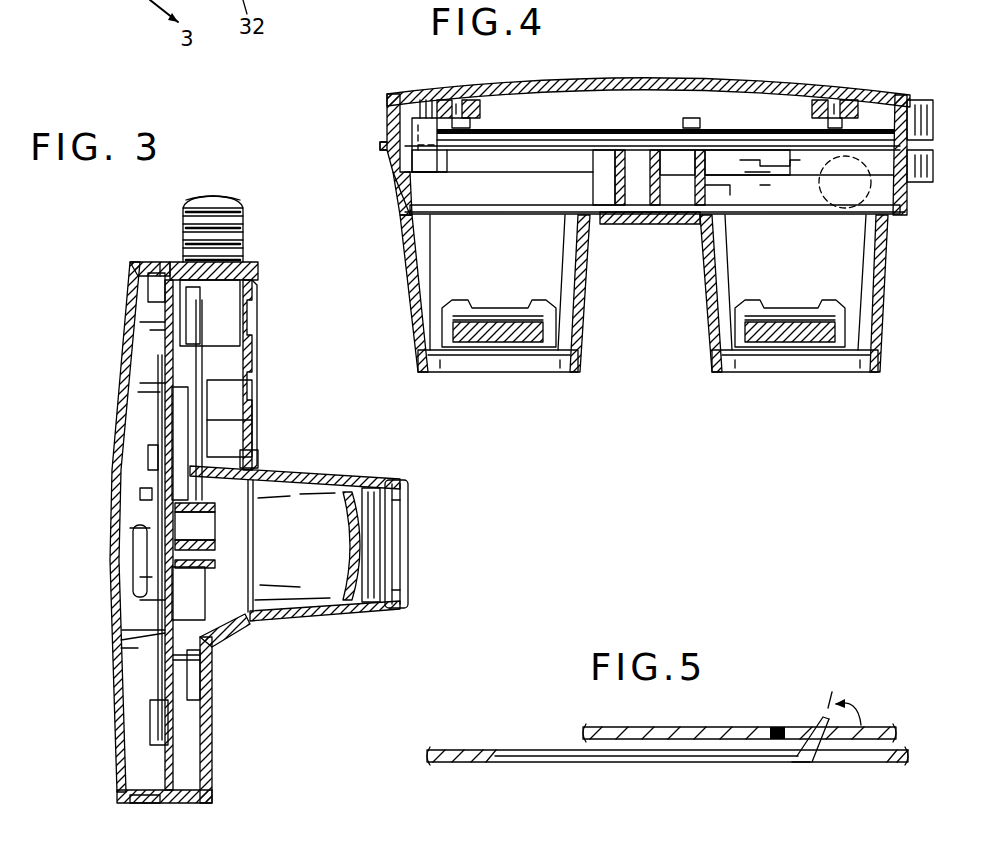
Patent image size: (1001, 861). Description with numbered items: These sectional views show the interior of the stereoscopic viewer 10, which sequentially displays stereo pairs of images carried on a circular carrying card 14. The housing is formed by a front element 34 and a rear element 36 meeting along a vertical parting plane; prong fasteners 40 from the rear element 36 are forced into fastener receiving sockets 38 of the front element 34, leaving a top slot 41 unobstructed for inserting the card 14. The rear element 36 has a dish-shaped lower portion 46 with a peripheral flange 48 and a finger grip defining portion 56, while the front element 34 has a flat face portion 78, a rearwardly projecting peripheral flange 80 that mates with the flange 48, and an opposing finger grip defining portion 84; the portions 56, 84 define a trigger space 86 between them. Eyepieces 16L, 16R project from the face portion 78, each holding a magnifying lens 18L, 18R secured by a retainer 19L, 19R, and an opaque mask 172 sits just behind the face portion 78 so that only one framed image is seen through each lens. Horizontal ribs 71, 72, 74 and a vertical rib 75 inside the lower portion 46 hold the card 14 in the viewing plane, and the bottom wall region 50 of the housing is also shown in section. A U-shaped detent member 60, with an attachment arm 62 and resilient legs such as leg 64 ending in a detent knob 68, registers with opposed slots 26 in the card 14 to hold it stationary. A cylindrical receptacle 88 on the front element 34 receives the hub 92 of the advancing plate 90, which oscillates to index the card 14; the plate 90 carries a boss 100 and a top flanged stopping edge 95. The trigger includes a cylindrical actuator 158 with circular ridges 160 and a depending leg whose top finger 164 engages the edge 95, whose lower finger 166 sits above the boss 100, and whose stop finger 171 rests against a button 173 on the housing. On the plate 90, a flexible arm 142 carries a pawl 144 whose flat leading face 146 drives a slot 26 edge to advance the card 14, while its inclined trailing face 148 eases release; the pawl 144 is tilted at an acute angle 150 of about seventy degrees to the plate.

In FIG. 3, the stereoscopic viewer 10 is at (69, 281).
In FIG. 4, the stereoscopic viewer 10 is at (661, 420).
In FIG. 4, the carrying card 14 is at (552, 128).
In FIG. 5, the carrying card 14 is at (720, 727).
In FIG. 3, the left eyepiece 16L is at (350, 470).
In FIG. 4, the left eyepiece 16L is at (410, 315).
In FIG. 4, the right eyepiece 16R is at (885, 260).
In FIG. 3, the left magnifying lens 18L is at (346, 522).
In FIG. 4, the left magnifying lens 18L is at (490, 344).
In FIG. 4, the right magnifying lens 18R is at (800, 344).
In FIG. 3, the left lens retainer 19L is at (370, 485).
In FIG. 4, the left lens retainer 19L is at (560, 330).
In FIG. 4, the right lens retainer 19R is at (855, 330).
In FIG. 5, the slot 26 is at (778, 727).
In FIG. 3, the front element 34 is at (214, 659).
In FIG. 4, the front element 34 is at (390, 182).
In FIG. 3, the rear element 36 is at (110, 419).
In FIG. 4, the rear element 36 is at (570, 80).
In FIG. 4, the fastener receiving socket 38 is at (412, 160).
In FIG. 4, the prong fastener 40 is at (412, 127).
In FIG. 3, the top slot 41 is at (160, 263).
In FIG. 3, the lower portion 46 is at (120, 490).
In FIG. 4, the lower portion 46 is at (800, 92).
In FIG. 3, the peripheral flange 48 is at (143, 262).
In FIG. 4, the peripheral flange 48 is at (386, 97).
In FIG. 3, the housing bottom wall 50 is at (116, 750).
In FIG. 3, the finger grip defining portion 56 is at (126, 298).
In FIG. 3, the detent member 60 is at (136, 553).
In FIG. 3, the attachment arm 62 is at (126, 528).
In FIG. 4, the attachment arm 62 is at (658, 100).
In FIG. 3, the resilient leg 64 is at (140, 576).
In FIG. 4, the resilient leg 64 is at (438, 92).
In FIG. 3, the detent knob 68 is at (150, 600).
In FIG. 4, the detent knob 68 is at (472, 125).
In FIG. 3, the horizontal rib 71 is at (143, 383).
In FIG. 3, the horizontal rib 72 is at (126, 470).
In FIG. 3, the horizontal rib 74 is at (116, 661).
In FIG. 4, the vertical rib 75 is at (690, 135).
In FIG. 4, the face portion 78 is at (645, 240).
In FIG. 4, the peripheral flange 80 is at (380, 149).
In FIG. 3, the finger grip defining portion 84 is at (256, 318).
In FIG. 3, the trigger space 86 is at (150, 320).
In FIG. 3, the cylindrical receptacle 88 is at (212, 568).
In FIG. 4, the cylindrical receptacle 88 is at (614, 224).
In FIG. 3, the advancing plate 90 is at (176, 660).
In FIG. 4, the advancing plate 90 is at (612, 140).
In FIG. 5, the advancing plate 90 is at (462, 762).
In FIG. 3, the hub 92 is at (206, 546).
In FIG. 4, the hub 92 is at (654, 226).
In FIG. 3, the top flanged stopping edge 95 is at (185, 380).
In FIG. 4, the top flanged stopping edge 95 is at (760, 150).
In FIG. 3, the boss 100 is at (202, 512).
In FIG. 4, the boss 100 is at (692, 224).
In FIG. 5, the flexible arm 142 is at (690, 762).
In FIG. 5, the pawl 144 is at (800, 760).
In FIG. 5, the leading face 146 is at (815, 752).
In FIG. 5, the trailing face 148 is at (805, 735).
In FIG. 5, the acute angle 150 is at (860, 752).
In FIG. 3, the cylindrical actuator 158 is at (205, 196).
In FIG. 4, the cylindrical actuator 158 is at (882, 208).
In FIG. 3, the circular ridges 160 is at (248, 236).
In FIG. 3, the top finger 164 is at (185, 375).
In FIG. 4, the top finger 164 is at (732, 190).
In FIG. 3, the lower finger 166 is at (268, 476).
In FIG. 4, the lower finger 166 is at (745, 100).
In FIG. 3, the stop finger 171 is at (190, 290).
In FIG. 3, the opaque mask 172 is at (252, 586).
In FIG. 4, the opaque mask 172 is at (460, 212).
In FIG. 3, the button 173 is at (258, 440).
In FIG. 4, the button 173 is at (402, 226).